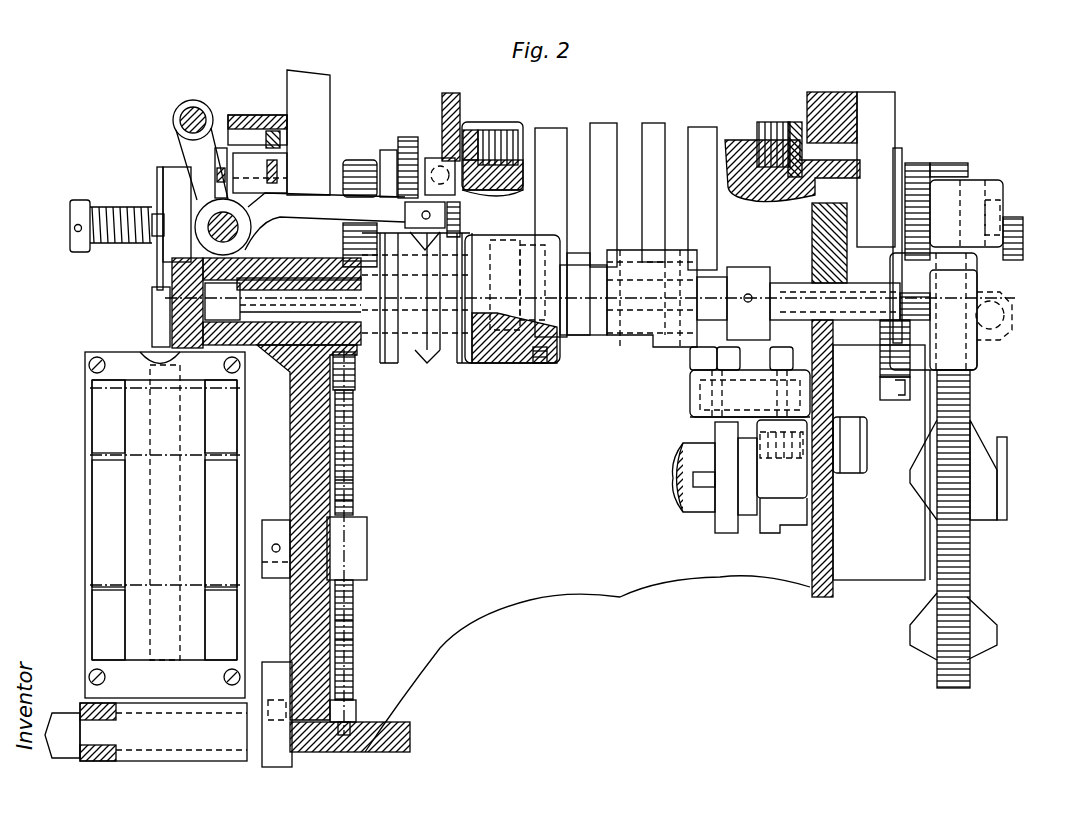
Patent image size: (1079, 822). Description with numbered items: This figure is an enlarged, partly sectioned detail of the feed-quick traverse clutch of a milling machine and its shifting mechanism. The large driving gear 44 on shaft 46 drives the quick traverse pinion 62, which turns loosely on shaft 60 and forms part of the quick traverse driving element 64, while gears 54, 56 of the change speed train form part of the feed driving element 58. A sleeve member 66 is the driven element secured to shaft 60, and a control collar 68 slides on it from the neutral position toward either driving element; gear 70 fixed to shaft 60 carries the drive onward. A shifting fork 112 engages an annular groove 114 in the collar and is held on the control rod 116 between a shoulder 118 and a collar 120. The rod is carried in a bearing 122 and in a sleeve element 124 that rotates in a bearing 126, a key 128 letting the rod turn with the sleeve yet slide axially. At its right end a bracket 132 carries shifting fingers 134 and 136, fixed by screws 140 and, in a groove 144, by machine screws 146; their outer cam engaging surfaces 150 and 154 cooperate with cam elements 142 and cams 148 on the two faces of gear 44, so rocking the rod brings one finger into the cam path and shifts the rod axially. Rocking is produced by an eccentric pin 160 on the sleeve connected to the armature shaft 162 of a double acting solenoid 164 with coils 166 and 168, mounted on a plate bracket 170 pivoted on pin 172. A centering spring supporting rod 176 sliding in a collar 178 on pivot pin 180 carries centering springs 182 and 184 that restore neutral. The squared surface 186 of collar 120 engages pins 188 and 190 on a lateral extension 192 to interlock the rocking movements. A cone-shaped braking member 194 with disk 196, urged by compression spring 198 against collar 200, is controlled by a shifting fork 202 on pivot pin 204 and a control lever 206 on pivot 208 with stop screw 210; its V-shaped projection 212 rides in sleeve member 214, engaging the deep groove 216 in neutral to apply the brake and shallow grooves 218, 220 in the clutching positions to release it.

The driving gear 44 is at (967, 560).
The shaft 46 is at (673, 483).
The gear 54 is at (452, 100).
The gear 56 is at (410, 140).
The feed driving element 58 is at (468, 125).
The supporting shaft 60 is at (70, 230).
The pinion 62 is at (933, 162).
The quick traverse driving element 64 is at (796, 127).
The sleeve member 66 is at (747, 140).
The control collar 68 is at (657, 127).
The gear 70 is at (372, 160).
The shifting fork 112 is at (623, 177).
The annular groove 114 is at (625, 130).
The control rod 116 is at (785, 287).
The shoulder 118 is at (530, 362).
The collar 120 is at (757, 255).
The bearing 122 is at (860, 273).
The sleeve element 124 is at (173, 273).
The bearing 126 is at (260, 362).
The key 128 is at (312, 292).
The bracket 132 is at (980, 188).
The clutch shifting finger 134 is at (1020, 245).
The clutch shifting finger 136 is at (905, 380).
The screws 140 is at (993, 207).
The cam elements 142 is at (972, 347).
The groove 144 is at (908, 300).
The machine screws 146 is at (912, 317).
The cams 148 is at (920, 482).
The cam engaging surface 150 is at (1013, 333).
The cam engaging surface 154 is at (905, 387).
The eccentric pin 160 is at (152, 300).
The armature shaft 162 is at (163, 355).
The double acting solenoid 164 is at (132, 513).
The coil 166 is at (105, 427).
The coil 168 is at (102, 603).
The plate bracket 170 is at (218, 693).
The pivot pin 172 is at (110, 747).
The centering spring supporting rod 176 is at (355, 477).
The collar 178 is at (362, 542).
The pivot pin 180 is at (263, 567).
The centering spring 182 is at (357, 487).
The centering spring 184 is at (355, 630).
The engaging surface 186 is at (772, 355).
The pin 188 is at (700, 360).
The pin 190 is at (777, 360).
The lateral extension 192 is at (690, 410).
The cone-shaped braking member 194 is at (250, 137).
The disk 196 is at (170, 170).
The compression spring 198 is at (93, 203).
The collar 200 is at (78, 247).
The shifting fork 202 is at (185, 152).
The pivot pin 204 is at (193, 107).
The control lever 206 is at (307, 187).
The pivot 208 is at (213, 220).
The adjustable stop screw 210 is at (217, 167).
The V-shaped projection 212 is at (403, 215).
The sleeve member 214 is at (487, 236).
The V-shaped groove 216 is at (428, 363).
The V-shaped groove 218 is at (393, 363).
The V-shaped groove 220 is at (460, 363).